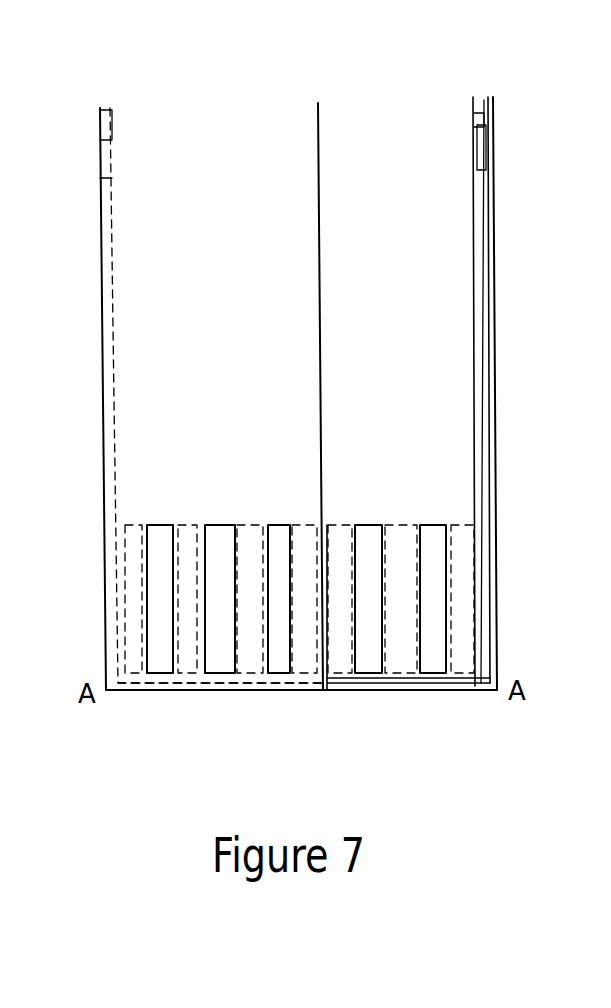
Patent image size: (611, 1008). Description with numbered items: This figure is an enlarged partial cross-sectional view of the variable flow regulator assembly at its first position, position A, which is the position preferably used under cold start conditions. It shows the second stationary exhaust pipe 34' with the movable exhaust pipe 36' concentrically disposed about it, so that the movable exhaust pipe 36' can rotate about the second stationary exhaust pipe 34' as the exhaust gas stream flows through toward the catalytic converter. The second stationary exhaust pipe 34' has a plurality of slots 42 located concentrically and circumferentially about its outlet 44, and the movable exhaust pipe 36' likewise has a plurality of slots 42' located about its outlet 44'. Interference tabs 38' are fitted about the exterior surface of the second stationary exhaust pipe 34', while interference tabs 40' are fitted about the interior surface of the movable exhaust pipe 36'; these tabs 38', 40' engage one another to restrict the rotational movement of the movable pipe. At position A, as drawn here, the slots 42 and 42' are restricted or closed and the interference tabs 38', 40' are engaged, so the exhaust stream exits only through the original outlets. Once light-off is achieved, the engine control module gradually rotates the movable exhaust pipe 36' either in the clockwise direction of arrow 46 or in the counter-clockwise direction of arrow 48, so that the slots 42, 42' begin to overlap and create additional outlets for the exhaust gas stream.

The second stationary exhaust pipe 34' is at (303, 393).
The movable exhaust pipe 36' is at (306, 391).
The interference tab 38' is at (298, 176).
The interference tab 40' is at (283, 106).
The slot 42 is at (296, 607).
The slot 42' is at (334, 599).
The outlet 44 is at (408, 664).
The outlet 44' is at (328, 720).
The arrow 46 is at (506, 568).
The arrow 48 is at (68, 641).